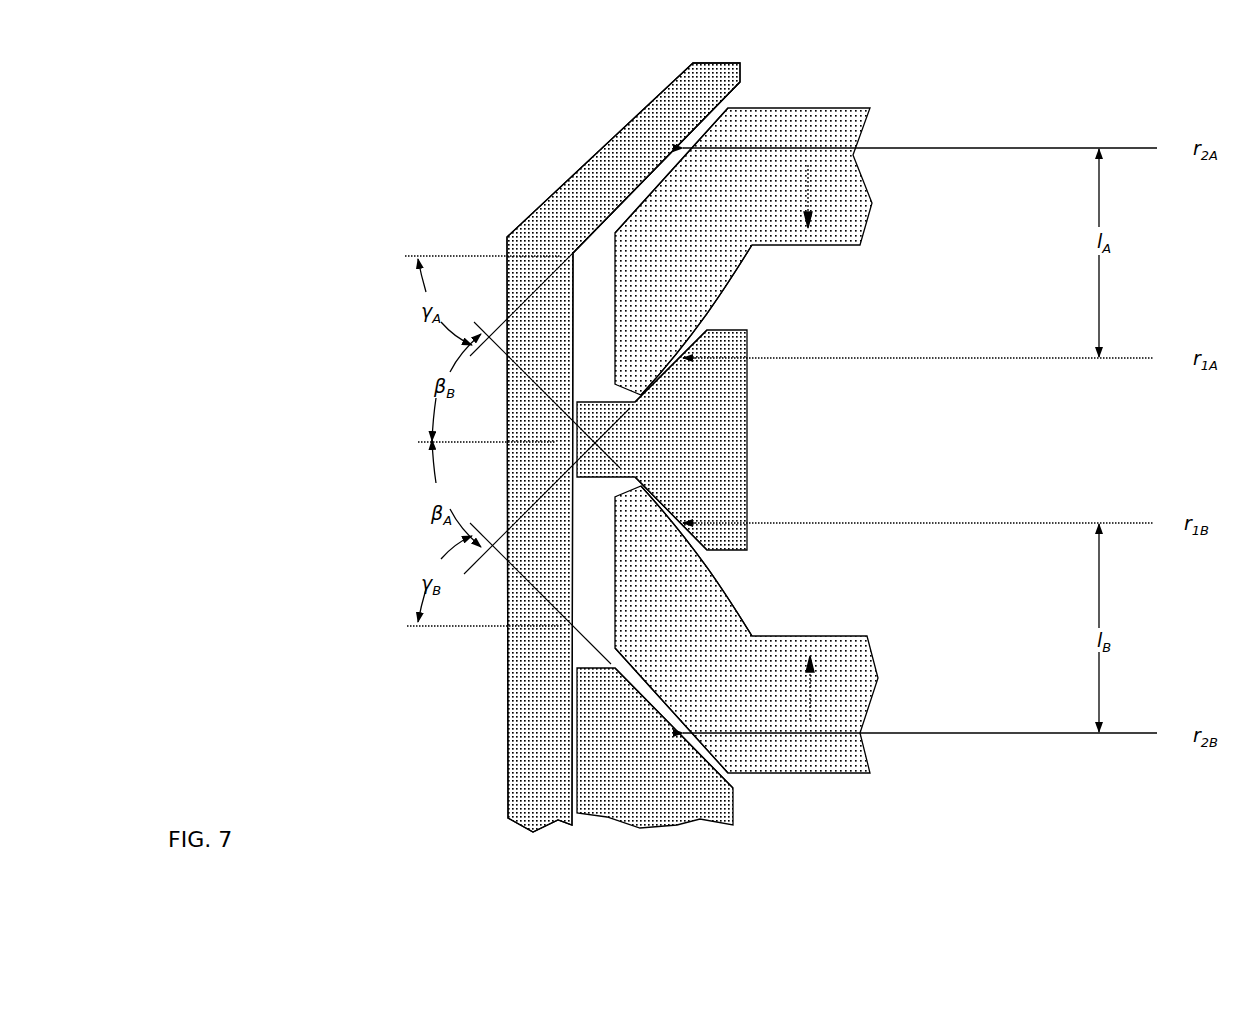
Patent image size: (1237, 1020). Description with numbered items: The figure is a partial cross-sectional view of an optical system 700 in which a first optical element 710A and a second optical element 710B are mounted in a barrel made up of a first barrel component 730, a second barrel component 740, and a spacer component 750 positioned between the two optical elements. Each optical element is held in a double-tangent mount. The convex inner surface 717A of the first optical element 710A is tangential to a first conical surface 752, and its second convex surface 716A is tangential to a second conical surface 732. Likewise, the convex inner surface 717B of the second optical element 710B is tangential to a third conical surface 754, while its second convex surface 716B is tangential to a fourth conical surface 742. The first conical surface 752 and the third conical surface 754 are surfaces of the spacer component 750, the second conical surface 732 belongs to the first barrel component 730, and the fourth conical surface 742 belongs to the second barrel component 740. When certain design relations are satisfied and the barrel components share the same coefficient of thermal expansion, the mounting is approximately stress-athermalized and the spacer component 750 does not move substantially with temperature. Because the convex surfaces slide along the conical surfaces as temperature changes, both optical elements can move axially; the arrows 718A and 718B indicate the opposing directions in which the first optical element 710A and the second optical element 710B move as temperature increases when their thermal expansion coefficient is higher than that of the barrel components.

The optical system 700 is at (385, 63).
The first optical element 710A is at (820, 107).
The second optical element 710B is at (836, 635).
The second convex surface 716A is at (645, 189).
The second convex surface 716B is at (642, 685).
The convex inner surface 717A is at (725, 291).
The convex inner surface 717B is at (728, 592).
The arrow 718A is at (812, 193).
The arrow 718B is at (813, 692).
The first barrel component 730 is at (610, 140).
The second conical surface 732 is at (719, 101).
The second barrel component 740 is at (663, 827).
The fourth conical surface 742 is at (626, 682).
The spacer component 750 is at (748, 437).
The first conical surface 752 is at (655, 388).
The third conical surface 754 is at (645, 482).